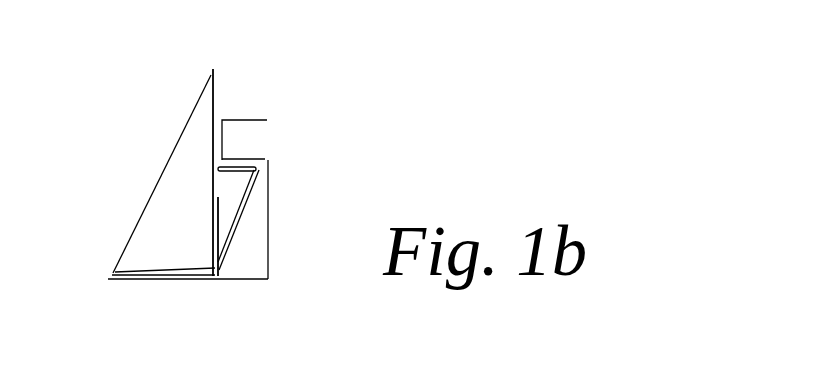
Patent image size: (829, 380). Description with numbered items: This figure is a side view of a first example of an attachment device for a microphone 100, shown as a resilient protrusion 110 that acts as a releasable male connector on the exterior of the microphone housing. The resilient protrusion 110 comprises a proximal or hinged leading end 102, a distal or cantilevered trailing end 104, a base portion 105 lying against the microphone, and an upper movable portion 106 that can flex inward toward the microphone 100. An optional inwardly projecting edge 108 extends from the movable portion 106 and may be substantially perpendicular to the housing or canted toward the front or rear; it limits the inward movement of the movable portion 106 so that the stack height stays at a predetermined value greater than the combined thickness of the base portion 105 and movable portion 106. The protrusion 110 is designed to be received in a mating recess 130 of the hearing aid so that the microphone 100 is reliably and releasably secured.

The microphone 100 is at (160, 188).
The hinged leading end 102 is at (207, 293).
The cantilevered trailing end 104 is at (277, 159).
The base portion 105 is at (225, 247).
The movable portion 106 is at (225, 252).
The inwardly projecting edge 108 is at (247, 158).
The resilient protrusion 110 is at (258, 226).
The recess 130 is at (268, 192).